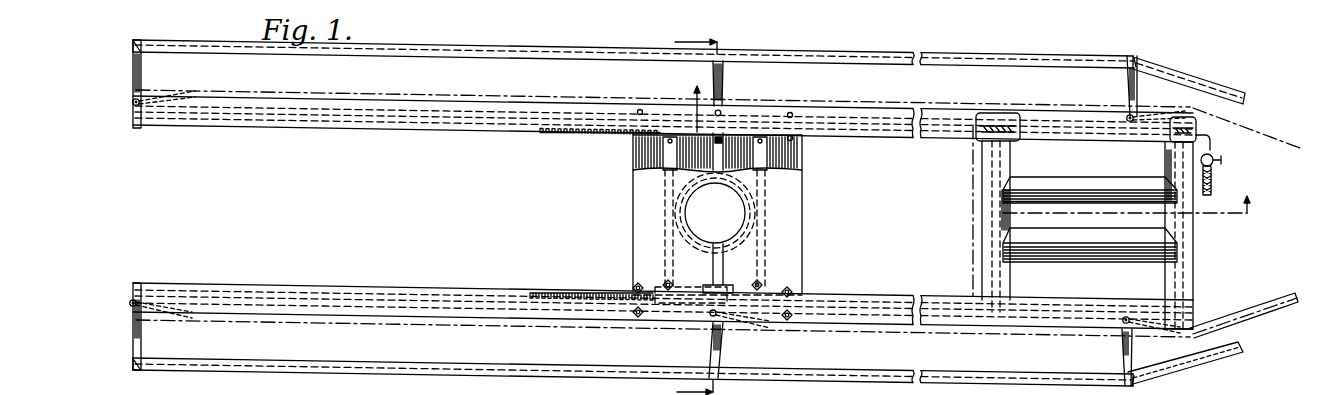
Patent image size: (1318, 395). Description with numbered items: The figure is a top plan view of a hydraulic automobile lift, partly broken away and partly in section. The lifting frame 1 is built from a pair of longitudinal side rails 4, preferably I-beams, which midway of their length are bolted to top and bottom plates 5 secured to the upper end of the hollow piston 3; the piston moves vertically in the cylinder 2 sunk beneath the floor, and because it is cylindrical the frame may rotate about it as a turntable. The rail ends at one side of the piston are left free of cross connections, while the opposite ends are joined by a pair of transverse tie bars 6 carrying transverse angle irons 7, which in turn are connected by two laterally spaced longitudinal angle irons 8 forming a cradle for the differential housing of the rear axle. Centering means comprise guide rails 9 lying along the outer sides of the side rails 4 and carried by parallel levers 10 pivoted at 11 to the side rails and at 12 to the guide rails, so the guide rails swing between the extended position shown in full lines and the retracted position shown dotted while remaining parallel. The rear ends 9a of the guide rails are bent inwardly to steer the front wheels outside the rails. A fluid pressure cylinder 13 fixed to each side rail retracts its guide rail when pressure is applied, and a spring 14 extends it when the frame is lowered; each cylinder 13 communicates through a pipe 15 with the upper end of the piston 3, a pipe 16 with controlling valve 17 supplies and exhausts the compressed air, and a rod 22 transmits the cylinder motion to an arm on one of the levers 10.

The lifting frame 1 is at (290, 127).
The cylinder 2 is at (767, 184).
The piston 3 is at (690, 233).
The longitudinal rails 4 is at (445, 135).
The top and bottom plates 5 is at (632, 145).
The transverse tie bars 6 is at (1000, 115).
The transverse angle irons 7 is at (983, 212).
The longitudinal angle irons 8 is at (1088, 273).
The guide rails 9 is at (468, 93).
The inclined ends of the guide rails 9a is at (1230, 92).
The levers 10 is at (141, 71).
The pivot 11 is at (134, 107).
The pivot 12 is at (134, 42).
The fluid pressure cylinder 13 is at (658, 135).
The spring 14 is at (558, 134).
The pipe 15 is at (720, 160).
The pipe 16 is at (845, 128).
The controlling valve 17 is at (1213, 168).
The rod 22 is at (368, 123).